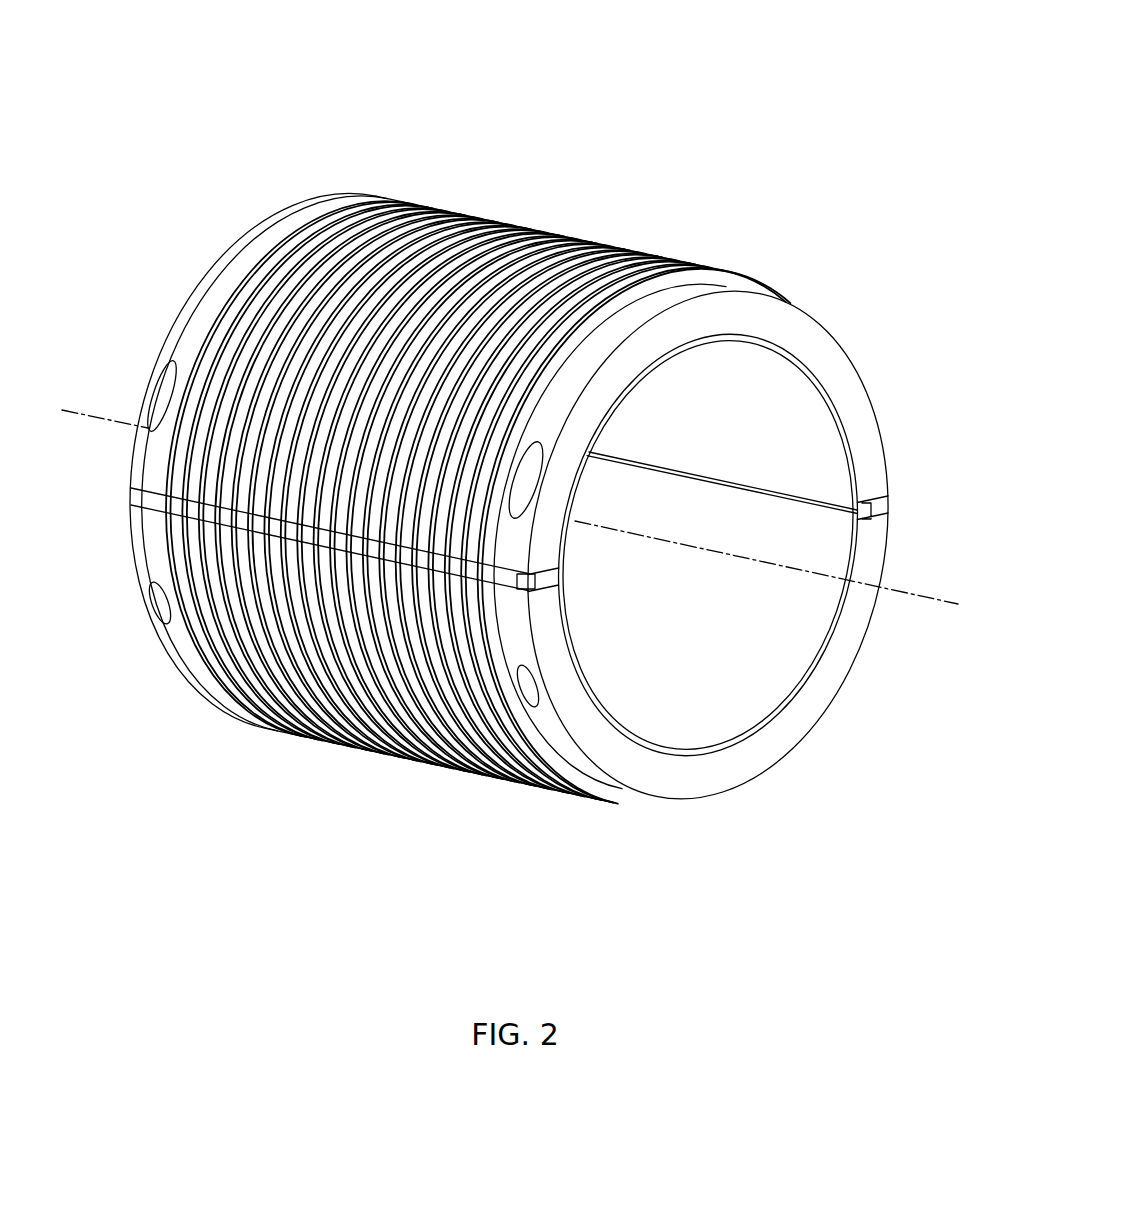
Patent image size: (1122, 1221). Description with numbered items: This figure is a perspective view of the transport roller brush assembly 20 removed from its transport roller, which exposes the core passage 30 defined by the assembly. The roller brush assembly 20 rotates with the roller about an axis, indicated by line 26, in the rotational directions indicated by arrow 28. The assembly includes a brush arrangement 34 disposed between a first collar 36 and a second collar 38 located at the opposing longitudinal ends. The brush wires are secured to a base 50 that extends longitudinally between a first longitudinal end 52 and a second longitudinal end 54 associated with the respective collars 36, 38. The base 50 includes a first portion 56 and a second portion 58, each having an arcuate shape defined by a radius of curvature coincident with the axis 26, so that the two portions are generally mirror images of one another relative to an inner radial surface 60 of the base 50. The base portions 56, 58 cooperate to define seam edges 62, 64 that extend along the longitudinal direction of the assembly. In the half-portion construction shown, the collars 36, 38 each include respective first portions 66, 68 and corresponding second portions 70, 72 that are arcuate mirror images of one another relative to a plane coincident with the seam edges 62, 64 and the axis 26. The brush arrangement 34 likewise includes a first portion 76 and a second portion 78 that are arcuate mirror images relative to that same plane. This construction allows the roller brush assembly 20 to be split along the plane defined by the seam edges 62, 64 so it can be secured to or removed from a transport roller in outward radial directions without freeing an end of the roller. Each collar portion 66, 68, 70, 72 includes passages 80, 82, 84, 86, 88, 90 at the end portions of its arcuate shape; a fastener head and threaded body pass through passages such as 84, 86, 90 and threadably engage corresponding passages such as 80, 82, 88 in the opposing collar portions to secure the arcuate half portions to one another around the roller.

The roller brush assembly 20 is at (703, 93).
The axis 26 is at (937, 599).
The arrow 28 is at (899, 624).
The core passage 30 is at (698, 688).
The brush arrangement 34 is at (711, 223).
The first collar 36 is at (240, 247).
The second collar 38 is at (817, 338).
The base 50 is at (633, 625).
The first longitudinal end 52 is at (285, 177).
The second longitudinal end 54 is at (904, 402).
The first portion 56 is at (717, 642).
The second portion 58 is at (744, 448).
The inner radial surface 60 is at (750, 717).
The seam edge 62 is at (556, 584).
The seam edge 64 is at (708, 478).
The first portion 66 is at (134, 560).
The first portion 68 is at (657, 785).
The second portion 70 is at (207, 283).
The second portion 72 is at (782, 322).
The first portion 76 is at (300, 724).
The second portion 78 is at (537, 232).
The passage 80 is at (147, 598).
The passage 82 is at (530, 685).
The passage 84 is at (149, 424).
The passage 86 is at (528, 480).
The passage 88 is at (897, 494).
The passage 90 is at (896, 441).